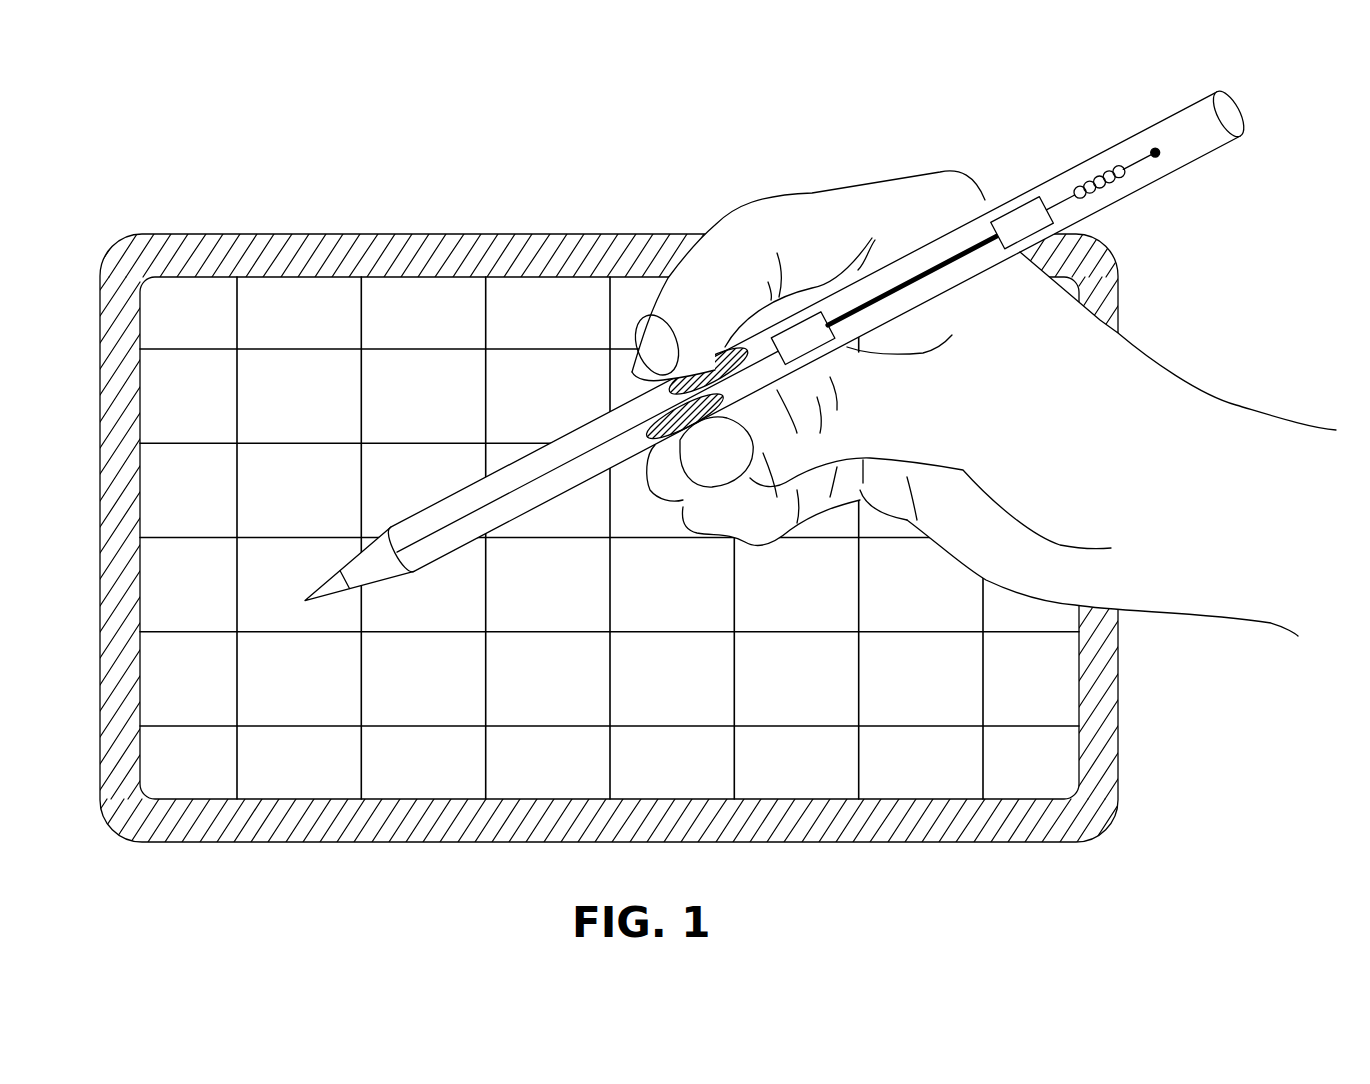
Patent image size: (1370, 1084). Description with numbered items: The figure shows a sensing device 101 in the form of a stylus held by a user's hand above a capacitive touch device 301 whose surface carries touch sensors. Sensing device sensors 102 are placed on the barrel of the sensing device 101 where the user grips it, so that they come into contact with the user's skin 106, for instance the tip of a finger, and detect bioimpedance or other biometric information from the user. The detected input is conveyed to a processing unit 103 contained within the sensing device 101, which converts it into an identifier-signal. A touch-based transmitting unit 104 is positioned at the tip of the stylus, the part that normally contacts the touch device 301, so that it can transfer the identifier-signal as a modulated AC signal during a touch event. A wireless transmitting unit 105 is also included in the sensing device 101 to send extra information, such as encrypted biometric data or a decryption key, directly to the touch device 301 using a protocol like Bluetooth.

The sensing device 101 is at (808, 371).
The sensing device sensors 102 is at (667, 397).
The processing unit 103 is at (808, 310).
The transmitting unit 104 is at (373, 572).
The wireless transmitting unit 105 is at (1024, 222).
The user's skin 106 is at (732, 543).
The capacitive touch device 301 is at (200, 234).